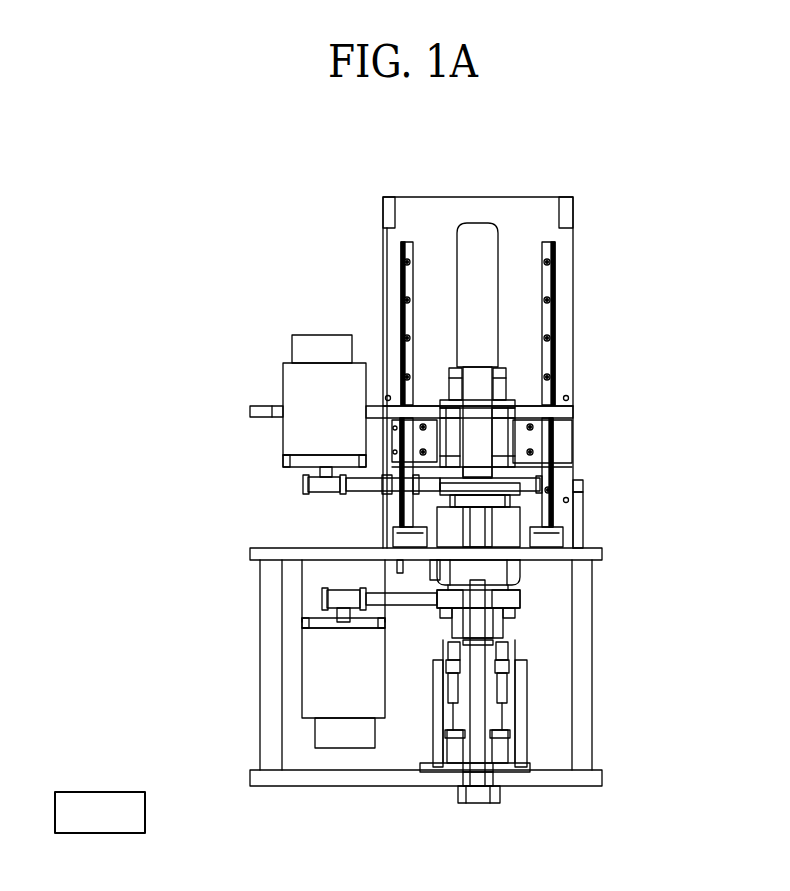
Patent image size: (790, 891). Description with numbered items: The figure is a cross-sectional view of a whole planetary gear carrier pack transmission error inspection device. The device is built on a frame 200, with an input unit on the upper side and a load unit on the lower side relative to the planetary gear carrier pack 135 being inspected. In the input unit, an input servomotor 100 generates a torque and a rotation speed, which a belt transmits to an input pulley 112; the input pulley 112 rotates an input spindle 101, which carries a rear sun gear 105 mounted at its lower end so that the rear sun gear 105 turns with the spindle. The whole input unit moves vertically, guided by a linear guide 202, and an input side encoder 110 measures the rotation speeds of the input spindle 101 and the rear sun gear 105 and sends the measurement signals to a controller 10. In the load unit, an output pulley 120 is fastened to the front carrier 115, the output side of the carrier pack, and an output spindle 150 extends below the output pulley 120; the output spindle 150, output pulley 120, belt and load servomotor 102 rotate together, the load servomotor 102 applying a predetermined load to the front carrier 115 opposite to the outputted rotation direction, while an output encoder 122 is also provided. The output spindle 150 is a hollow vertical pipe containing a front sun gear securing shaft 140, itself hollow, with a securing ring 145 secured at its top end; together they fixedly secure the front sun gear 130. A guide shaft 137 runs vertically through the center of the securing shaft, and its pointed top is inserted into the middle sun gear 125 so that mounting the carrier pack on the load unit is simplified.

The controller 10 is at (100, 792).
The input servomotor 100 is at (293, 438).
The input spindle 101 is at (533, 426).
The load servomotor 102 is at (363, 483).
The rear sun gear 105 is at (487, 516).
The input side encoder 110 is at (448, 378).
The input pulley 112 is at (520, 482).
The front carrier 115 is at (517, 582).
The output pulley 120 is at (520, 600).
The output encoder 122 is at (500, 745).
The middle sun gear 125 is at (503, 657).
The front sun gear 130 is at (488, 613).
The planetary gear carrier pack 135 is at (440, 573).
The guide shaft 137 is at (480, 790).
The front sun gear securing shaft 140 is at (453, 660).
The securing ring 145 is at (447, 637).
The output spindle 150 is at (448, 645).
The frame 200 is at (266, 554).
The linear guide 202 is at (548, 282).